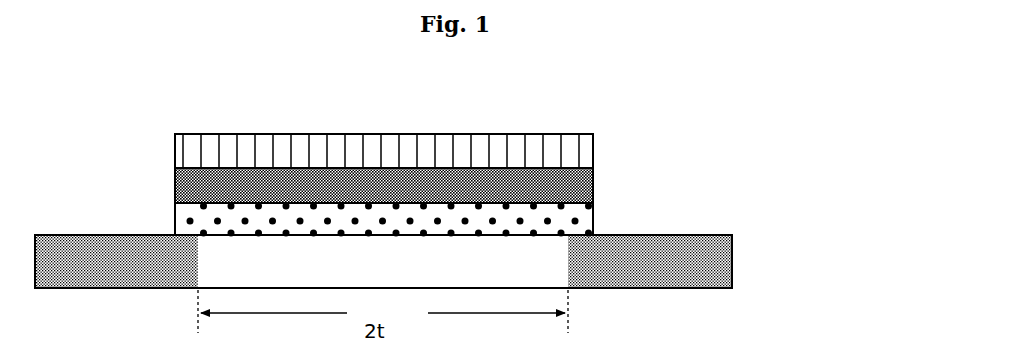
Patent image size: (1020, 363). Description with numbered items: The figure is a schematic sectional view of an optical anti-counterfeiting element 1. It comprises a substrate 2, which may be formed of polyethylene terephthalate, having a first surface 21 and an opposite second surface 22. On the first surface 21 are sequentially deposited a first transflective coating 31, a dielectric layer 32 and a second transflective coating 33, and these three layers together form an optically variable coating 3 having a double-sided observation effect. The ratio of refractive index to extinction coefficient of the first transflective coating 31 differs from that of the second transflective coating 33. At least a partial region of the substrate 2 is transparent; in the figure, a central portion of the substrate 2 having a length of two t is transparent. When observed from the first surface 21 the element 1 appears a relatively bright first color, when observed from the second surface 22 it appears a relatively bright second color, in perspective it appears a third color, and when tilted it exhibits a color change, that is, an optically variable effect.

The optical anti-counterfeiting element 1 is at (758, 157).
The substrate 2 is at (695, 264).
The first surface 21 is at (692, 234).
The second surface 22 is at (695, 290).
The optically variable coating 3 is at (361, 185).
The first transflective coating 31 is at (173, 220).
The dielectric layer 32 is at (173, 188).
The second transflective coating 33 is at (173, 152).